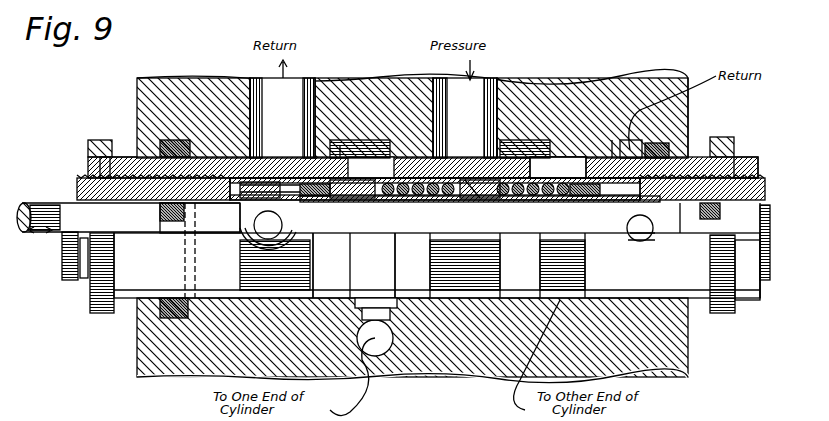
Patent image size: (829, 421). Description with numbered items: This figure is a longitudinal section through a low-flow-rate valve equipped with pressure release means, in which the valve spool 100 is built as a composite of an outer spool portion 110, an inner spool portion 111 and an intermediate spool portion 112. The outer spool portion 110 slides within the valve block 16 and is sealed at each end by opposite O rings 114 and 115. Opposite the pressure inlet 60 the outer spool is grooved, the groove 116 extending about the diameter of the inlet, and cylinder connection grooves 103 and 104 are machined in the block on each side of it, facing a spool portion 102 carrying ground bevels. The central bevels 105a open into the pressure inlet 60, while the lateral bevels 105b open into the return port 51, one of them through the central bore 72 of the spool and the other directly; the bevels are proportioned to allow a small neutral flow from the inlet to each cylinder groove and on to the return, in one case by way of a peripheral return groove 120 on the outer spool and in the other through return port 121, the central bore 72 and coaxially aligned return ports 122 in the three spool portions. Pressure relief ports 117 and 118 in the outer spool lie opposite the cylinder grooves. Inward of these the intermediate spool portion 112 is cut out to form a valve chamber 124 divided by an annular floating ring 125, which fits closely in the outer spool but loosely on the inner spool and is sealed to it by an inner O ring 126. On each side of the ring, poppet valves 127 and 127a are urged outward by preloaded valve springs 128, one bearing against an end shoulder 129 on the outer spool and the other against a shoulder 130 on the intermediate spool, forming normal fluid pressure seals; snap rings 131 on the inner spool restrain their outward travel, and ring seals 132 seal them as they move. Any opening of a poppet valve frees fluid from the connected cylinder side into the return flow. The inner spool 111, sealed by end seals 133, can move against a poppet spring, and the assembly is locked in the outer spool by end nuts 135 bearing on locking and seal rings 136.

The valve block 16 is at (640, 120).
The return port 51 is at (282, 118).
The pressure inlet 60 is at (465, 118).
The central bore 72 is at (480, 211).
The valve spool 100 is at (140, 270).
The spool portion 102 is at (525, 158).
The cylinder groove 103 is at (340, 158).
The cylinder groove 104 is at (560, 150).
The central bevel 105a is at (430, 150).
The lateral bevel 105b is at (325, 150).
The outer spool portion 110 is at (130, 157).
The inner spool portion 111 is at (409, 265).
The intermediate spool portion 112 is at (72, 182).
The O ring 114 is at (176, 140).
The O ring 115 is at (640, 140).
The groove 116 is at (497, 150).
The pressure relief port 117 is at (429, 167).
The pressure relief port 118 is at (558, 167).
The peripheral return groove 120 is at (246, 155).
The return port 121 is at (665, 145).
The return ports 122 is at (255, 183).
The valve chamber 124 is at (300, 192).
The floating ring 125 is at (470, 185).
The inner O ring 126 is at (478, 198).
The poppet valve 127 is at (345, 190).
The poppet valve 127a is at (562, 263).
The valve spring 128 is at (420, 200).
The end shoulder 129 is at (290, 222).
The shoulder 130 is at (628, 228).
The snap ring 131 is at (330, 200).
The ring seal 132 is at (365, 197).
The end seal 133 is at (160, 212).
The end nut 135 is at (84, 152).
The locking and seal ring 136 is at (108, 140).